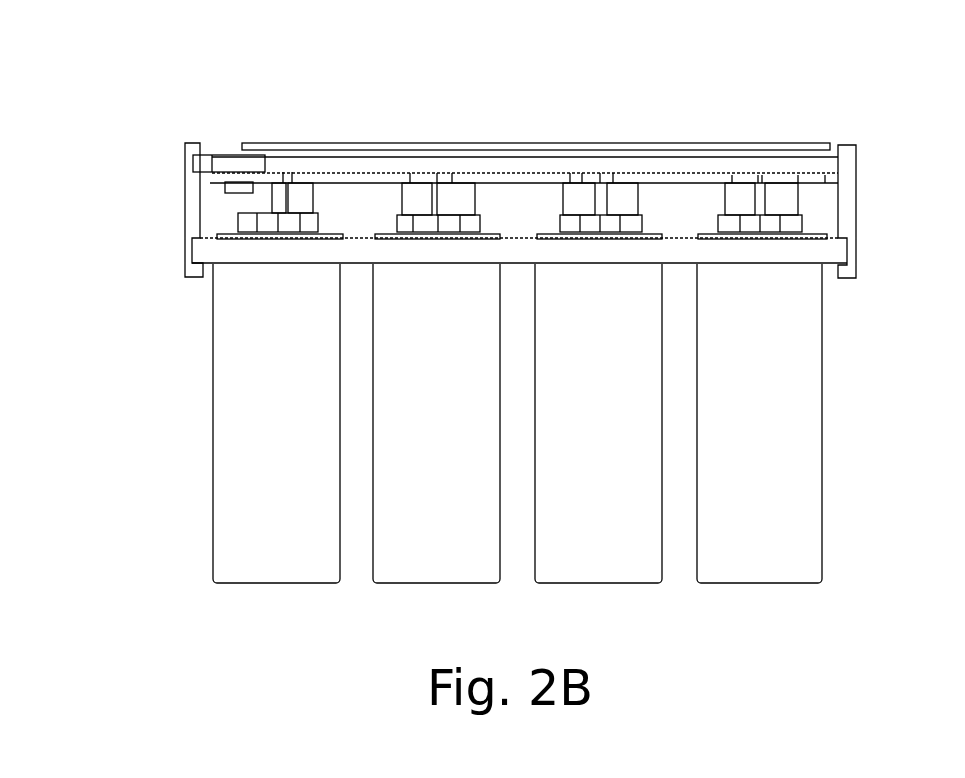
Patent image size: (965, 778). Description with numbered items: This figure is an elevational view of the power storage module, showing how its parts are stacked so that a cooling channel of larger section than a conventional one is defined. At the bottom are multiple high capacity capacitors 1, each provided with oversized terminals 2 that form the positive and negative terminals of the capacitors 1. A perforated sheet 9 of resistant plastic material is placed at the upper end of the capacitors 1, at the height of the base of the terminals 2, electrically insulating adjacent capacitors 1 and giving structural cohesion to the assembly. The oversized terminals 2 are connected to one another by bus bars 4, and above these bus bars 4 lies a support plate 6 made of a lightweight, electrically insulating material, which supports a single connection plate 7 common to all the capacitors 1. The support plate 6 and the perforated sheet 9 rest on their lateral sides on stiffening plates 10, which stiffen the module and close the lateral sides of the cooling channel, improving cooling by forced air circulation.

The high capacity capacitor 1 is at (597, 512).
The oversized terminals 2 is at (458, 198).
The bus bars 4 is at (668, 178).
The support plate 6 is at (240, 160).
The connection plate 7 is at (792, 148).
The perforated sheet 9 is at (788, 253).
The stiffening plates 10 is at (190, 199).